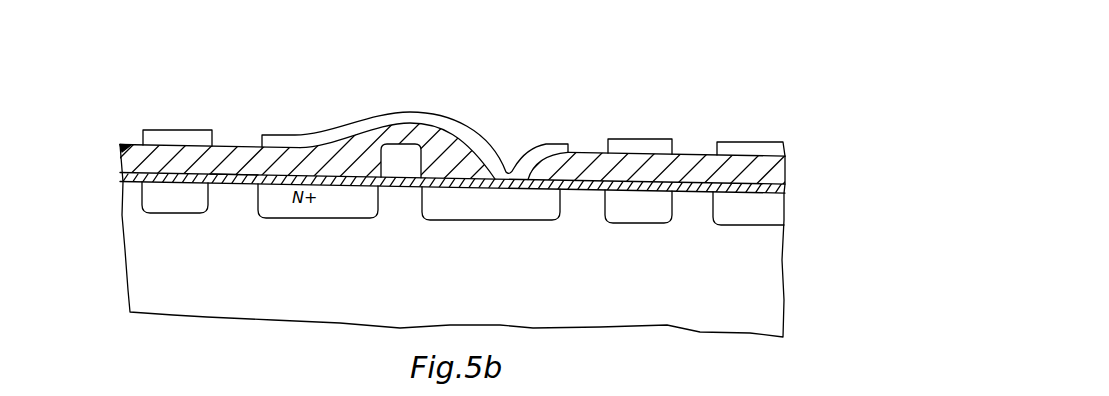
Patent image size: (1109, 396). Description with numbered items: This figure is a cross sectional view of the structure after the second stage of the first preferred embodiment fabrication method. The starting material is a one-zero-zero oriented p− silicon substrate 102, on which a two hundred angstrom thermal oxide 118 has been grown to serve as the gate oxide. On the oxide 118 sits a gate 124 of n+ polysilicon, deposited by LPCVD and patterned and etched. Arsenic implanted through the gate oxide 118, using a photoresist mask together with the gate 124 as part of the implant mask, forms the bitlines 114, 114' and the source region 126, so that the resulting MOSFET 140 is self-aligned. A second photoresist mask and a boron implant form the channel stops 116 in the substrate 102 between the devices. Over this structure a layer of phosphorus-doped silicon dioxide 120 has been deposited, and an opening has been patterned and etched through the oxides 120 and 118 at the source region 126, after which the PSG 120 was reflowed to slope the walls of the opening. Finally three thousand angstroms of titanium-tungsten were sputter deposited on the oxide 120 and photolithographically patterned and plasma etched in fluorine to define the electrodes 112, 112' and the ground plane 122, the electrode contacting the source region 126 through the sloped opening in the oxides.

The p− silicon substrate 102 is at (378, 296).
The electrode 112 is at (415, 131).
The electrode 112' is at (775, 125).
The bitline 114 is at (245, 131).
The bitline 114' is at (784, 225).
The channel stop 116 is at (146, 190).
The thermal oxide 118 is at (783, 188).
The phosphorus-doped silicon dioxide 120 is at (781, 179).
The ground plane 122 is at (185, 98).
The gate 124 is at (405, 150).
The source region 126 is at (500, 213).
The MOSFET 140 is at (422, 124).